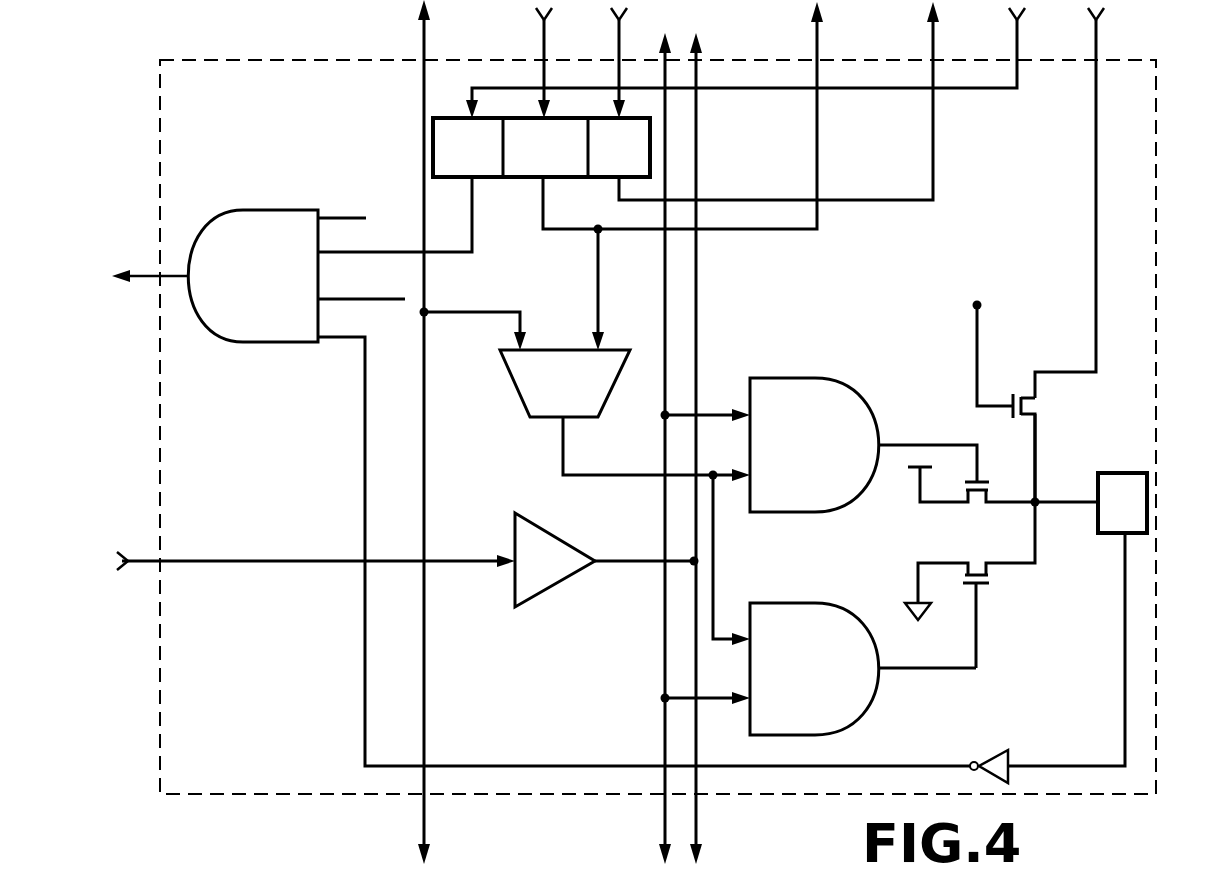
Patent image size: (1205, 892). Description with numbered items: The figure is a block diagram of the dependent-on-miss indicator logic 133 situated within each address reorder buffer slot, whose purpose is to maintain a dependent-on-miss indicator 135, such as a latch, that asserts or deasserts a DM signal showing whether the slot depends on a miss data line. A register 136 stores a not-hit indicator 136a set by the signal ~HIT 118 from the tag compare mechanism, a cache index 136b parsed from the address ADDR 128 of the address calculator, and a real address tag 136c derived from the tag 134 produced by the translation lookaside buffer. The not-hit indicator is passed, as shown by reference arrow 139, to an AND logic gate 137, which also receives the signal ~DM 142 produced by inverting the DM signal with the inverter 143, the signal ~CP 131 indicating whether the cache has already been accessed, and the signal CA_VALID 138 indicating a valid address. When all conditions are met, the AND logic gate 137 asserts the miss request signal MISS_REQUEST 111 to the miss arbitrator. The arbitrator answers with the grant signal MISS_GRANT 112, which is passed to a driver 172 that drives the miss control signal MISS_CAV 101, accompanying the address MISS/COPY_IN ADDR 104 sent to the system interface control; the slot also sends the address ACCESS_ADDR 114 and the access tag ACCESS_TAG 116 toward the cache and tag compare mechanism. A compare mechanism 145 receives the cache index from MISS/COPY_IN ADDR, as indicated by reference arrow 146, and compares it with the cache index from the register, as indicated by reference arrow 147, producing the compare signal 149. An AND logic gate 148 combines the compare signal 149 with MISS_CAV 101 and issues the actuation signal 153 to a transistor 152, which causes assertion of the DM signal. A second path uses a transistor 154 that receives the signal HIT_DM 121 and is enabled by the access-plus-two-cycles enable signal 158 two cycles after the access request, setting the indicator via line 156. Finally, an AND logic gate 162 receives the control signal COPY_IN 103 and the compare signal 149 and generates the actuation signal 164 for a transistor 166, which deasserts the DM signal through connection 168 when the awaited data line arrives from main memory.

The miss control signal MISS_CAV 101 is at (697, 818).
The control signal COPY_IN 103 is at (660, 817).
The address MISS/COPY_IN ADDR 104 is at (425, 815).
The miss request signal MISS_REQUEST 111 is at (150, 276).
The grant signal MISS_GRANT 112 is at (138, 565).
The address ACCESS_ADDR 114 is at (822, 38).
The access tag ACCESS_TAG 116 is at (937, 38).
The signal ~HIT 118 is at (1020, 40).
The signal HIT_DM 121 is at (1100, 40).
The address ADDR 128 is at (550, 40).
The signal ~CP 131 is at (364, 219).
The dependent-on-miss indicator logic 133 is at (252, 795).
The real address tag 134 is at (626, 40).
The dependent-on-miss indicator 135 is at (1125, 473).
The register 136 is at (594, 102).
The not hit indicator 136a is at (448, 118).
The cache index 136b is at (516, 118).
The real address tag 136c is at (638, 118).
The AND logic gate 137 is at (240, 210).
The signal CA_VALID 138 is at (388, 300).
The reference arrow for ~HIT indicator 139 is at (474, 232).
The signal ~DM 142 is at (365, 420).
The inverter 143 is at (995, 752).
The compare mechanism 145 is at (518, 395).
The reference arrow for cache index from MISS/COPY_IN ADDR 146 is at (452, 313).
The reference arrow for cache index from register 147 is at (597, 300).
The AND logic gate 148 is at (778, 378).
The compare signal 149 is at (629, 450).
The transistor 152 is at (975, 522).
The actuation signal 153 is at (921, 443).
The transistor 154 is at (1046, 406).
The line 156 is at (1037, 450).
The signal ACCESS_+_2 158 is at (977, 338).
The AND logic gate 162 is at (795, 603).
The actuation signal 164 is at (928, 668).
The transistor 166 is at (979, 548).
The connection 168 is at (1038, 535).
The driver 172 is at (550, 595).